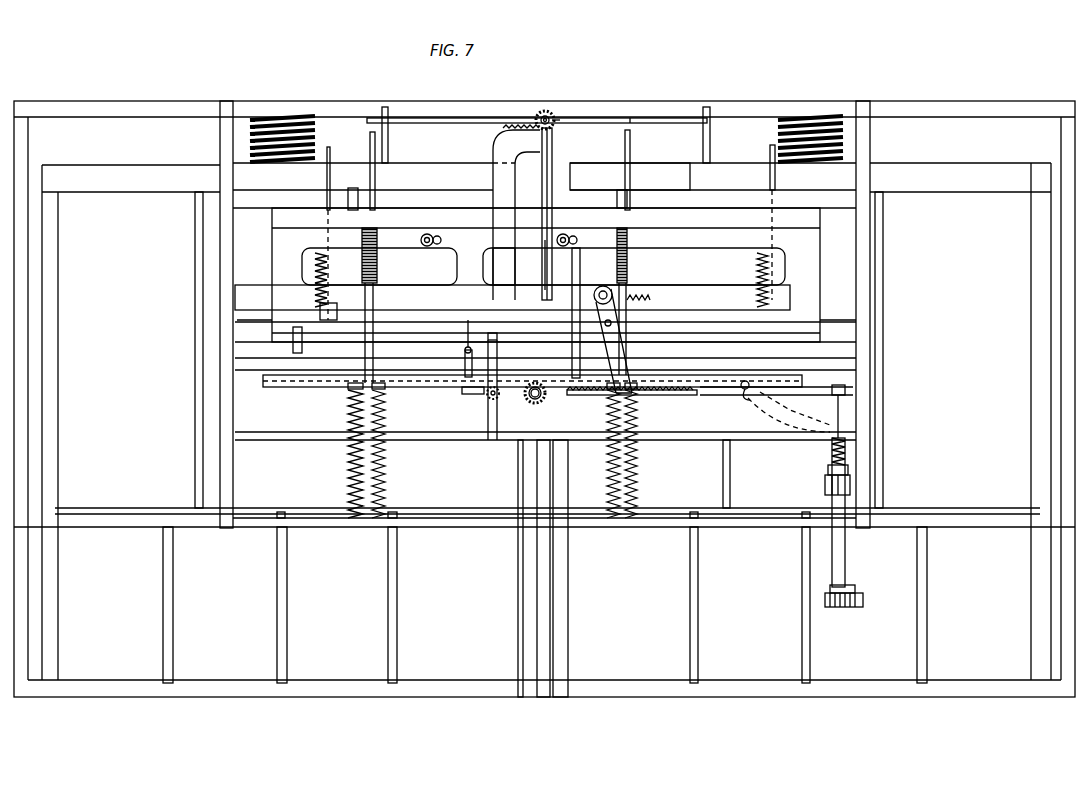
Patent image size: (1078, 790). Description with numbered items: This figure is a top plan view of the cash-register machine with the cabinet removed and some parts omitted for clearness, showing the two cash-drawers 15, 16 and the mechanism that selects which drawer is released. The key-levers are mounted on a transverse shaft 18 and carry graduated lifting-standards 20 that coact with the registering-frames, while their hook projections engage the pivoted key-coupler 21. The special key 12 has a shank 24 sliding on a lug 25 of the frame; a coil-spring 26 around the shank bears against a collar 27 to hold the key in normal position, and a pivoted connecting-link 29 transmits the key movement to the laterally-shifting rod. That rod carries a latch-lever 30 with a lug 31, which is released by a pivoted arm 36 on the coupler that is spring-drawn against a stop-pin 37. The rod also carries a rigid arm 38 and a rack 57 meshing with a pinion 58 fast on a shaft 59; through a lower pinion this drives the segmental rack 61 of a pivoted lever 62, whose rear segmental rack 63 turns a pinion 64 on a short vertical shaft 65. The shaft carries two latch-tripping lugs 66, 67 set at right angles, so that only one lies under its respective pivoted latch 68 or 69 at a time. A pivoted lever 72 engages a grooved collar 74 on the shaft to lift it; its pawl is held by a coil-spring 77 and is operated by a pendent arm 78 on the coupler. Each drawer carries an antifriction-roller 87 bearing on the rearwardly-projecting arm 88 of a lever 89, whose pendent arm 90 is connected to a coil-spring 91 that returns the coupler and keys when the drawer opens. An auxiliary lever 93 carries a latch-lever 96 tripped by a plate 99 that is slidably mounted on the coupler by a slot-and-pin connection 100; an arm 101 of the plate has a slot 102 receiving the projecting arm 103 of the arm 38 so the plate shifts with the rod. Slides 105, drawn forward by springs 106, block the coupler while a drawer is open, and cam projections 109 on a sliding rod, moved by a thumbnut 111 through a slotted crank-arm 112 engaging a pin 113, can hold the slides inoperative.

The special key 12 is at (845, 608).
The cash-drawer 15 is at (282, 431).
The cash-drawer 16 is at (794, 430).
The transverse shaft 18 is at (282, 368).
The graduated lifting-standard 20 is at (743, 391).
The key-coupler 21 is at (705, 243).
The shank 24 is at (846, 562).
The lug 25 is at (825, 485).
The coil-spring 26 is at (832, 450).
The collar 27 is at (828, 469).
The connecting-link 29 is at (780, 412).
The latch-lever 30 is at (656, 396).
The lug 31 is at (692, 396).
The pivoted arm 36 is at (600, 338).
The stop-pin 37 is at (652, 284).
The rigid arm 38 is at (510, 366).
The rack 57 is at (546, 396).
The pinion 58 is at (540, 404).
The shaft 59 is at (493, 401).
The segmental rack 61 is at (583, 366).
The pivoted lever 62 is at (504, 266).
The segmental rack 63 is at (516, 212).
The pinion 64 is at (549, 115).
The vertical shaft 65 is at (553, 131).
The latch-tripping lug 66 is at (542, 112).
The latch-tripping lug 67 is at (561, 123).
The pivoted latch 68 is at (638, 118).
The pivoted latch 69 is at (409, 118).
The pivoted lever 72 is at (572, 177).
The collar 74 is at (390, 139).
The coil-spring 77 is at (535, 262).
The pendent arm 78 is at (560, 282).
The antifriction-roller 87 is at (360, 160).
The rearwardly-projecting arm 88 is at (365, 176).
The lever 89 is at (366, 265).
The pendent arm 90 is at (374, 400).
The coil-spring 91 is at (379, 460).
The auxiliary lever 93 is at (366, 247).
The latch-lever 96 is at (368, 240).
The plate 99 is at (437, 241).
The slot-and-pin connection 100 is at (445, 228).
The arm 101 is at (458, 281).
The slot 102 is at (473, 367).
The projecting arm 103 is at (683, 338).
The slide 105 is at (327, 180).
The spring 106 is at (768, 255).
The cam projection 109 is at (330, 322).
The thumbnut 111 is at (472, 398).
The crank-arm 112 is at (485, 352).
The pin 113 is at (497, 338).